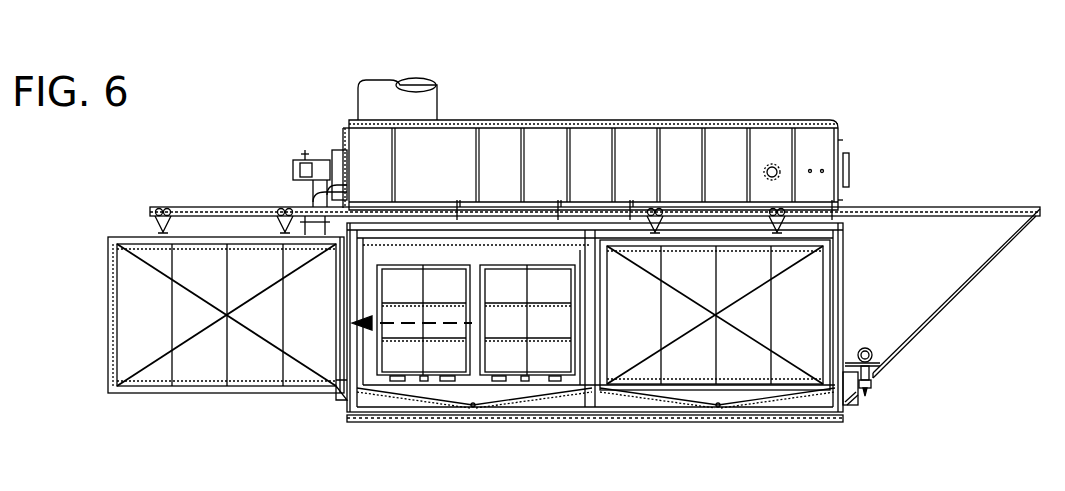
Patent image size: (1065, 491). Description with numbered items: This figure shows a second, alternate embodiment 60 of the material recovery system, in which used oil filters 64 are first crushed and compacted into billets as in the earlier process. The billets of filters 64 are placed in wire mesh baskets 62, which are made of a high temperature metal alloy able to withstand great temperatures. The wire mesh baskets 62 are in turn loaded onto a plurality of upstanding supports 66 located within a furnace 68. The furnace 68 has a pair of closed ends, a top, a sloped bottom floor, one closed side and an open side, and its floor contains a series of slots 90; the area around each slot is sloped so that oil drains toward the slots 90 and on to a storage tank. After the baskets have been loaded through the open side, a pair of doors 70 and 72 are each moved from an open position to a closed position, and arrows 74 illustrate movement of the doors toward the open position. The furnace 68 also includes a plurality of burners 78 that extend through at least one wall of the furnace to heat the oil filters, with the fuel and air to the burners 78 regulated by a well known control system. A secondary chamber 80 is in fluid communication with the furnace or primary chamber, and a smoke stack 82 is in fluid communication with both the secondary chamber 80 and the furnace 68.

The alternate embodiment 60 is at (239, 150).
The wire mesh baskets 62 is at (580, 362).
The used oil filters 64 is at (512, 326).
The upstanding supports 66 is at (447, 384).
The furnace 68 is at (888, 410).
The door 70 is at (152, 315).
The door 72 is at (786, 298).
The arrows 74 is at (397, 320).
The burners 78 is at (870, 388).
The secondary chamber 80 is at (634, 134).
The smoke stack 82 is at (420, 108).
The slots 90 is at (473, 408).